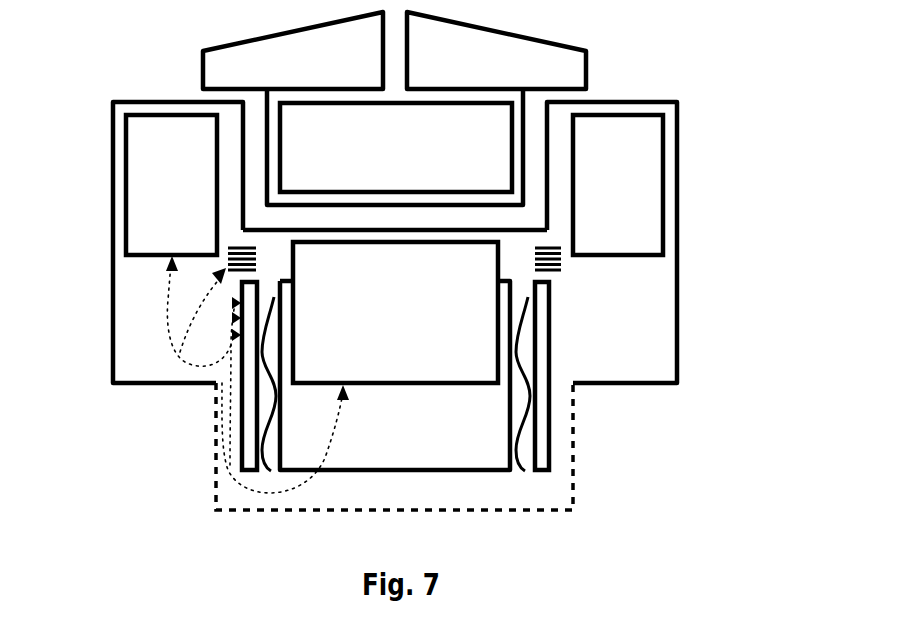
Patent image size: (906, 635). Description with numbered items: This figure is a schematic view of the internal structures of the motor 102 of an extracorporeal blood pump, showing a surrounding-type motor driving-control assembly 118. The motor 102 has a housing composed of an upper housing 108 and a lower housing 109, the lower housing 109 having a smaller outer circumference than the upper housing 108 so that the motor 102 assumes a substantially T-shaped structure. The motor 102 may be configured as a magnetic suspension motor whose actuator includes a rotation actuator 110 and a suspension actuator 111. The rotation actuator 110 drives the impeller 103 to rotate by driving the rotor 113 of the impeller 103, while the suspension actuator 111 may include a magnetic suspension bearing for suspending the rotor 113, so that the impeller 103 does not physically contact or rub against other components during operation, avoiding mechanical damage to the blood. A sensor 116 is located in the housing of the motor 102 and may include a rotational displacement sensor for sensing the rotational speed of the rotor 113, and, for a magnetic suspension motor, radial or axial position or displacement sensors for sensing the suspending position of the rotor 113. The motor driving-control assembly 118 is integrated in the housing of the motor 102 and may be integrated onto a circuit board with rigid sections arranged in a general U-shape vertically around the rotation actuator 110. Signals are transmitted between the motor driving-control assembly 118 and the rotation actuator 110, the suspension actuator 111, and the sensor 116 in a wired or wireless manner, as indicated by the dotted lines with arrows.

The motor 102 is at (102, 38).
The impeller 103 is at (481, 48).
The upper housing 108 is at (673, 295).
The lower housing 109 is at (575, 456).
The rotation actuator 110 is at (345, 315).
The suspension actuator 111 is at (153, 212).
The rotor 113 is at (396, 147).
The sensor 116 is at (559, 271).
The motor driving-control assembly 118 is at (247, 400).